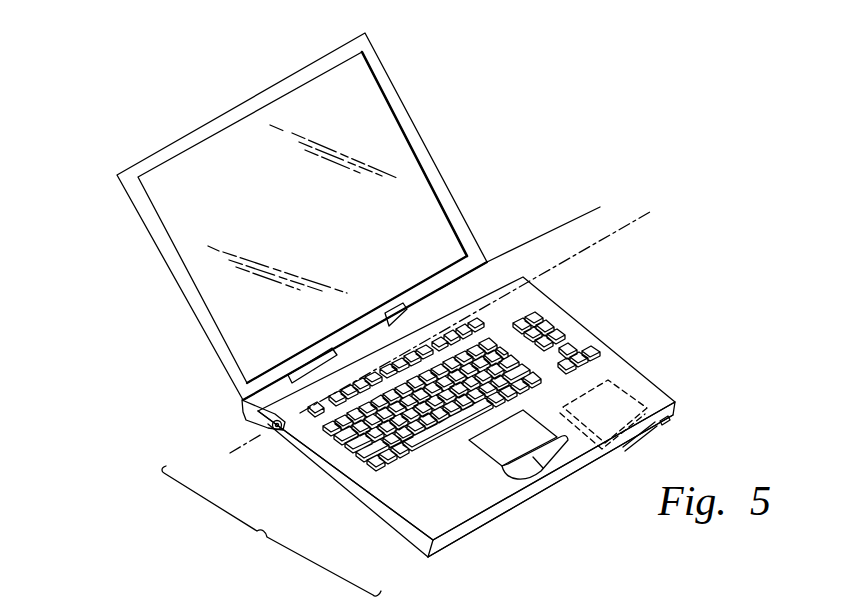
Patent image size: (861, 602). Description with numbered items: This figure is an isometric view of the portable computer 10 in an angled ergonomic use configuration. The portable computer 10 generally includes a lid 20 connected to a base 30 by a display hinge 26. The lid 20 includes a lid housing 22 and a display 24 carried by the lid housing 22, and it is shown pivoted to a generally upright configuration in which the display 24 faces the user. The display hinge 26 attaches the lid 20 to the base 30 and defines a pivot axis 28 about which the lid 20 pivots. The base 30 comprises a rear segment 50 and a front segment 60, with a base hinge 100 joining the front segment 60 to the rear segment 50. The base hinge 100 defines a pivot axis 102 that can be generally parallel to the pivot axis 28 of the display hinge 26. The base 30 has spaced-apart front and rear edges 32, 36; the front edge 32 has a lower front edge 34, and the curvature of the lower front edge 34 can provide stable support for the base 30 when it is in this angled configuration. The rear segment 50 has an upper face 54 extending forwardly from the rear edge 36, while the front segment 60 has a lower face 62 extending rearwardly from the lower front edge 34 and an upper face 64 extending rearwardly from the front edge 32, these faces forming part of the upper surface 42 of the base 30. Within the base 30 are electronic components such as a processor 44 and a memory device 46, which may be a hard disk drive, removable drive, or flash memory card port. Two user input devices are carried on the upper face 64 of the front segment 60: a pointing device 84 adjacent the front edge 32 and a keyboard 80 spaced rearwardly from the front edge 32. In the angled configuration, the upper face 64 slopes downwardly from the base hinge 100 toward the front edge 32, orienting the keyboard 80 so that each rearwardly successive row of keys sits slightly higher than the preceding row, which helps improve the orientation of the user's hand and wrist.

The portable computer 10 is at (587, 128).
The lid 20 is at (113, 165).
The lid housing 22 is at (406, 117).
The display 24 is at (282, 219).
The display hinge 26 is at (243, 408).
The pivot axis 28 is at (583, 213).
The base 30 is at (257, 532).
The front edge 32 is at (511, 508).
The lower front edge 34 is at (467, 536).
The rear edge 36 is at (240, 418).
The upper surface 42 is at (553, 291).
The processor 44 is at (440, 305).
The memory device 46 is at (628, 397).
The rear segment 50 is at (493, 274).
The upper face of the rear segment 54 is at (307, 379).
The front segment 60 is at (417, 508).
The lower face of the front segment 62 is at (351, 496).
The upper face of the front segment 64 is at (391, 352).
The keyboard 80 is at (514, 364).
The pointing device 84 is at (514, 443).
The base hinge 100 is at (272, 434).
The pivot axis 102 is at (616, 224).